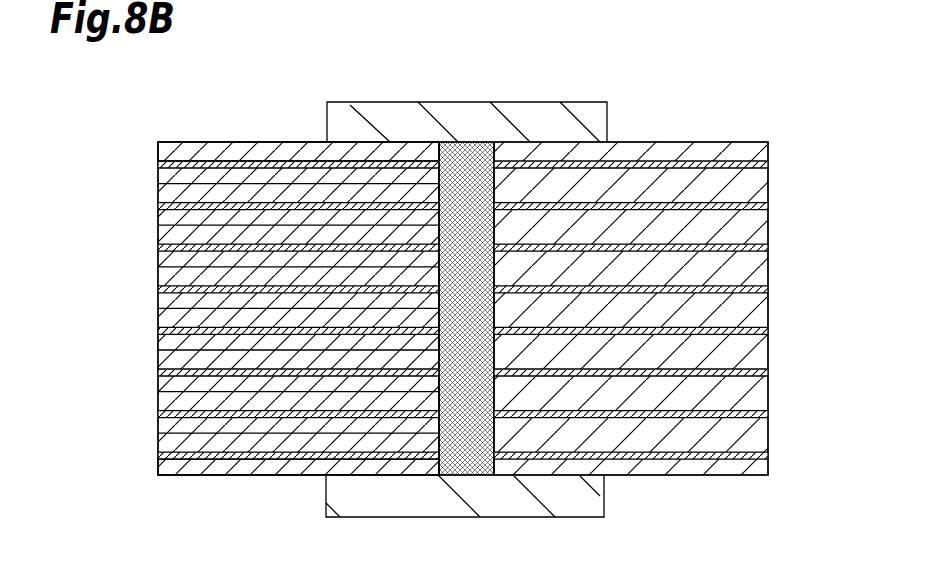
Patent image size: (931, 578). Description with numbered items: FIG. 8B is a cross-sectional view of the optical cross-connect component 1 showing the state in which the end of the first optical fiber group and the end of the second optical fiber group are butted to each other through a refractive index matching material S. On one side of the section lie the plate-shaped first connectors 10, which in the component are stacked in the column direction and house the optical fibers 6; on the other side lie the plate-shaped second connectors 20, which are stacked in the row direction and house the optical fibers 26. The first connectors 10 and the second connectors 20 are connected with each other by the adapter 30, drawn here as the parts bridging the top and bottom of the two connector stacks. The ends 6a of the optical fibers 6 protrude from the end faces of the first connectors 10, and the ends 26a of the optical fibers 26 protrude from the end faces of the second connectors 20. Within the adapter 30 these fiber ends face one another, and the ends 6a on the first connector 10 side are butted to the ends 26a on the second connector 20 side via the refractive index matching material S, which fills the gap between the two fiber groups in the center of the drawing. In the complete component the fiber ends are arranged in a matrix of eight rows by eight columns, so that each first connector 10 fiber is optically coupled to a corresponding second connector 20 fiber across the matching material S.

The optical cross-connect component 1 is at (747, 87).
The optical fiber 6 is at (217, 162).
The end of optical fiber 6a is at (436, 158).
The first connector 10 is at (157, 186).
The second connector 20 is at (656, 308).
The optical fiber 26 is at (733, 165).
The end of optical fiber 26a is at (498, 158).
The adapter 30 is at (580, 112).
The refractive index matching material S is at (470, 477).